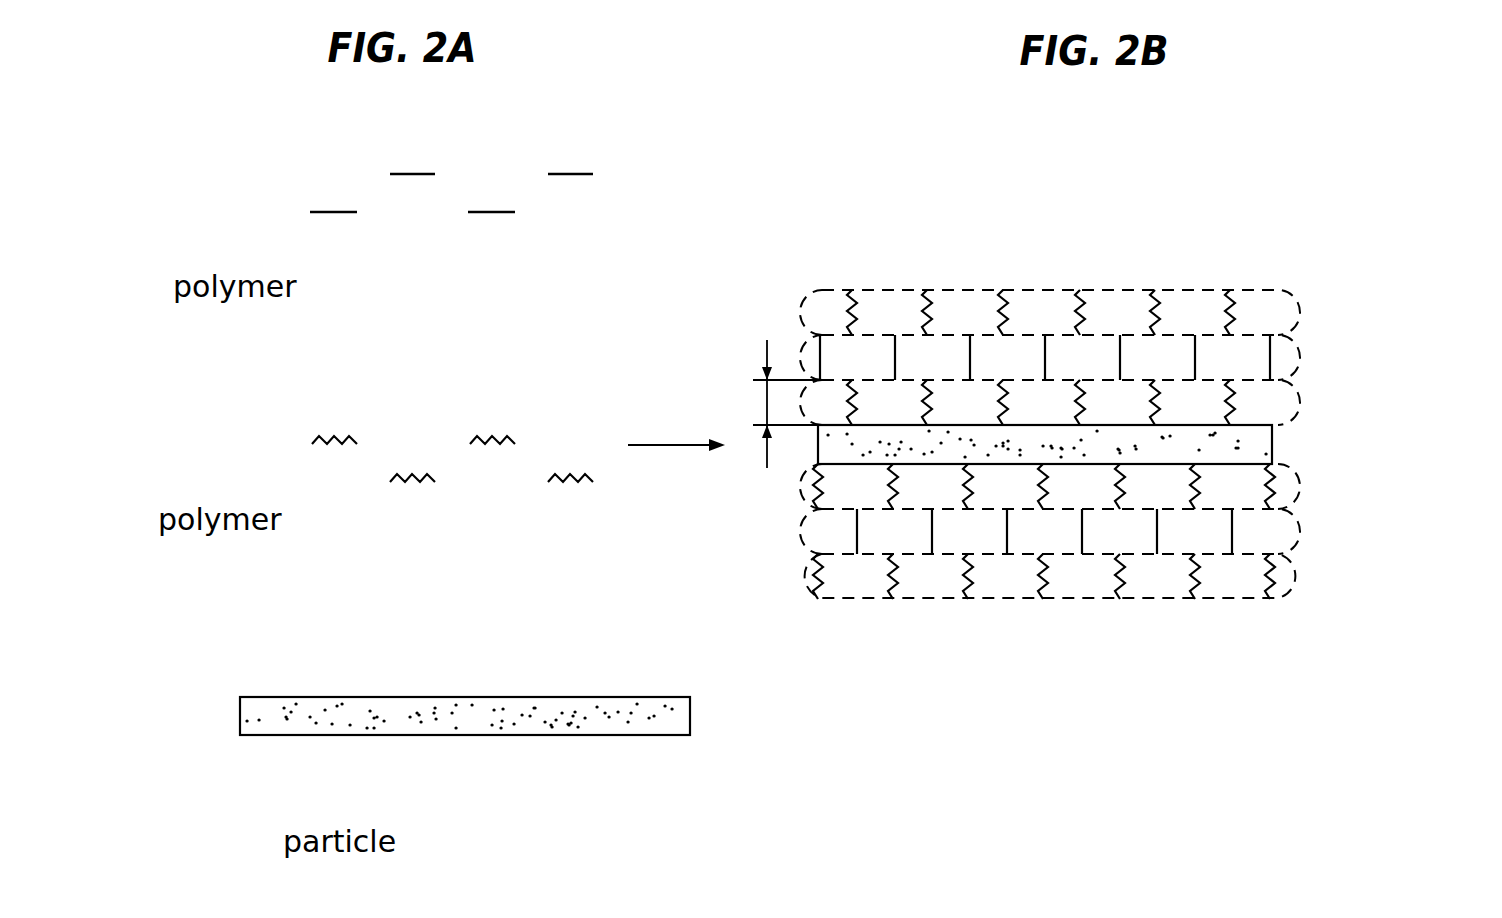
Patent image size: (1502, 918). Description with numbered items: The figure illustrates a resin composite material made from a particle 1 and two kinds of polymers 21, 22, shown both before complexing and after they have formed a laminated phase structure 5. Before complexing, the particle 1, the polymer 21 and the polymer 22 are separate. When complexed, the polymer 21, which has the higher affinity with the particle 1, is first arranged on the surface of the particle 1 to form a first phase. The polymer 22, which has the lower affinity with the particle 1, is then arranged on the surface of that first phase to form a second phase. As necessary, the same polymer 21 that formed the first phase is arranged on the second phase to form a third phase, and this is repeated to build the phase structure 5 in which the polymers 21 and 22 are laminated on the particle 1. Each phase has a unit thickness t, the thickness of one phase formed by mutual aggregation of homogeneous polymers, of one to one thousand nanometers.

In FIG. 2A, the particle 1 is at (352, 737).
In FIG. 2B, the particle 1 is at (818, 447).
In FIG. 2A, the polymer 21 is at (335, 452).
In FIG. 2B, the polymer 21 is at (842, 302).
In FIG. 2A, the polymer 22 is at (333, 216).
In FIG. 2B, the polymer 22 is at (817, 357).
In FIG. 2B, the phase structure 5 is at (1136, 357).
In FIG. 2B, the unit thickness t is at (765, 403).